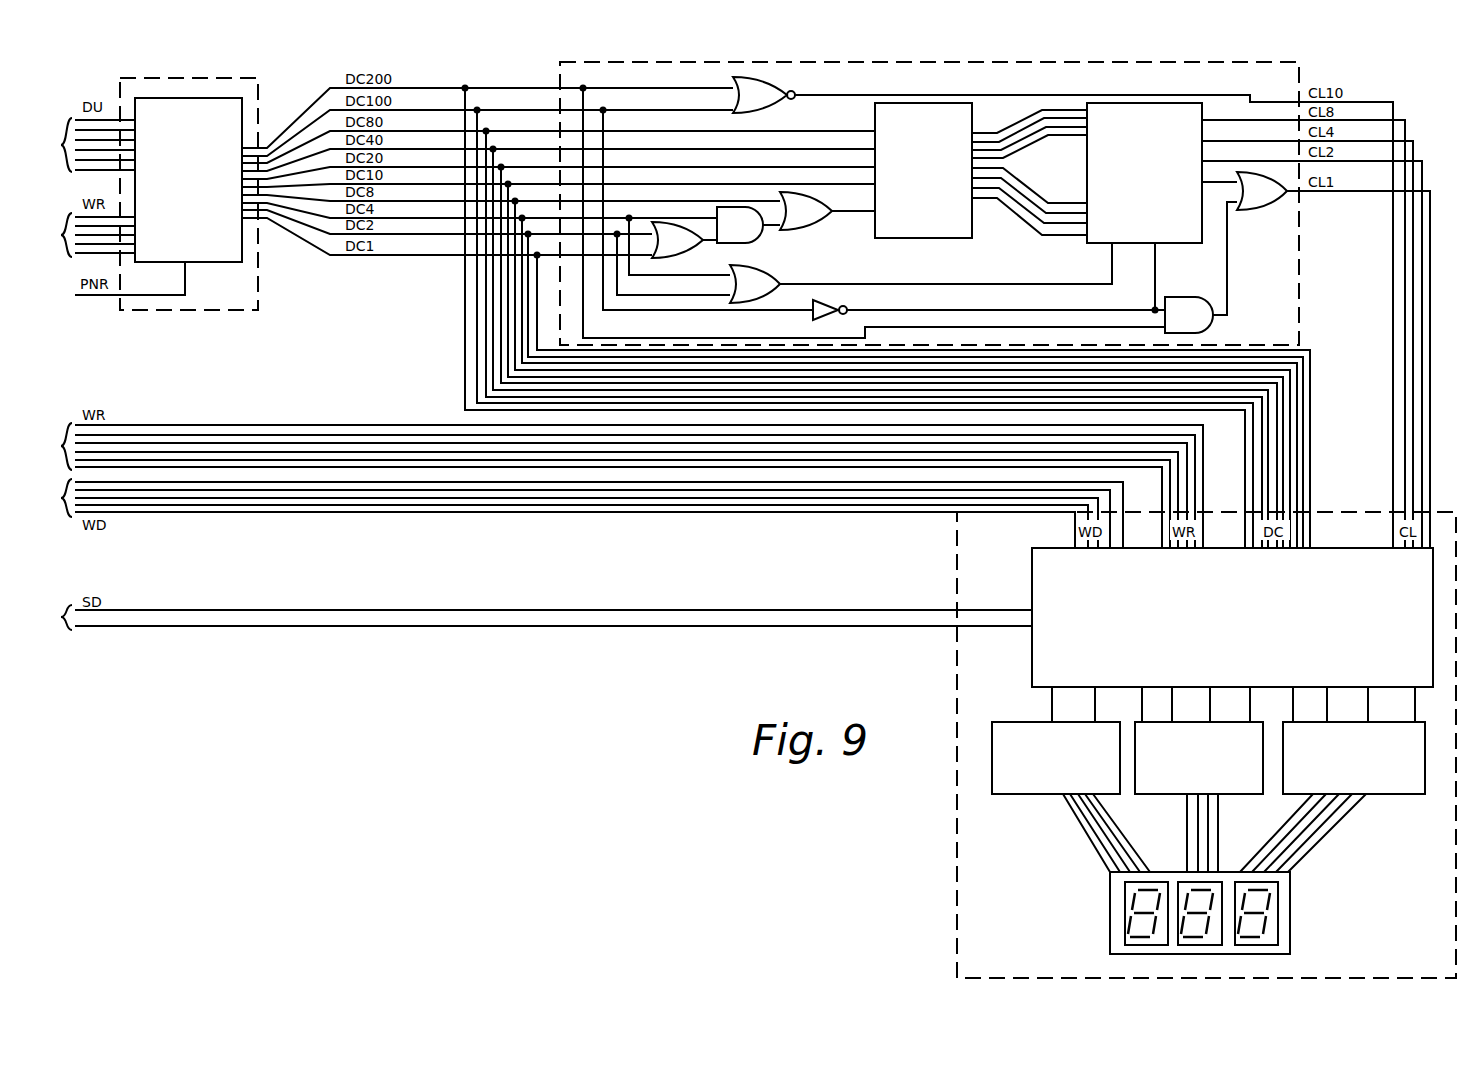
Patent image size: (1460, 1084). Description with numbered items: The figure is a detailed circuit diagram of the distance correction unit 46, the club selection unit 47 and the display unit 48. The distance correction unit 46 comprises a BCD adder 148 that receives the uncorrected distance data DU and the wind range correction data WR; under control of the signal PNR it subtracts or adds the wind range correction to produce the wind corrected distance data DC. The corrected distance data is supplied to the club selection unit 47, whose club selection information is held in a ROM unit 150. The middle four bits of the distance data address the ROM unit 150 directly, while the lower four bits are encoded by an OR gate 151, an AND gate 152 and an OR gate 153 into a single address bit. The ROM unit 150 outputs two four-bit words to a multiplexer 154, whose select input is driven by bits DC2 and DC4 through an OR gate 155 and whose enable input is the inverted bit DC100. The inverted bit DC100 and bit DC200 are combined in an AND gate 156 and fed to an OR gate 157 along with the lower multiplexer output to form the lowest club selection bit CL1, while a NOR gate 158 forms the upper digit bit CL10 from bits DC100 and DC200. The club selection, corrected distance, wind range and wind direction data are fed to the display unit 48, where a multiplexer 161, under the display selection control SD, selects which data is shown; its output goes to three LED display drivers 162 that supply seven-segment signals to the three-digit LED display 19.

The distance correction unit 46 is at (245, 311).
The BCD adder 148 is at (200, 263).
The club selection unit 47 is at (1300, 296).
The ROM unit 150 is at (952, 238).
The OR gate 151 is at (688, 256).
The AND gate 152 is at (748, 244).
The OR gate 153 is at (812, 229).
The multiplexer 154 is at (1087, 243).
The OR gate 155 is at (777, 276).
The AND gate 156 is at (1192, 285).
The OR gate 157 is at (1262, 210).
The NOR gate 158 is at (775, 110).
The display unit 48 is at (955, 850).
The multiplexer 161 is at (1032, 663).
The LED display driver 162 is at (1022, 796).
The three-digit LED display 19 is at (1292, 927).